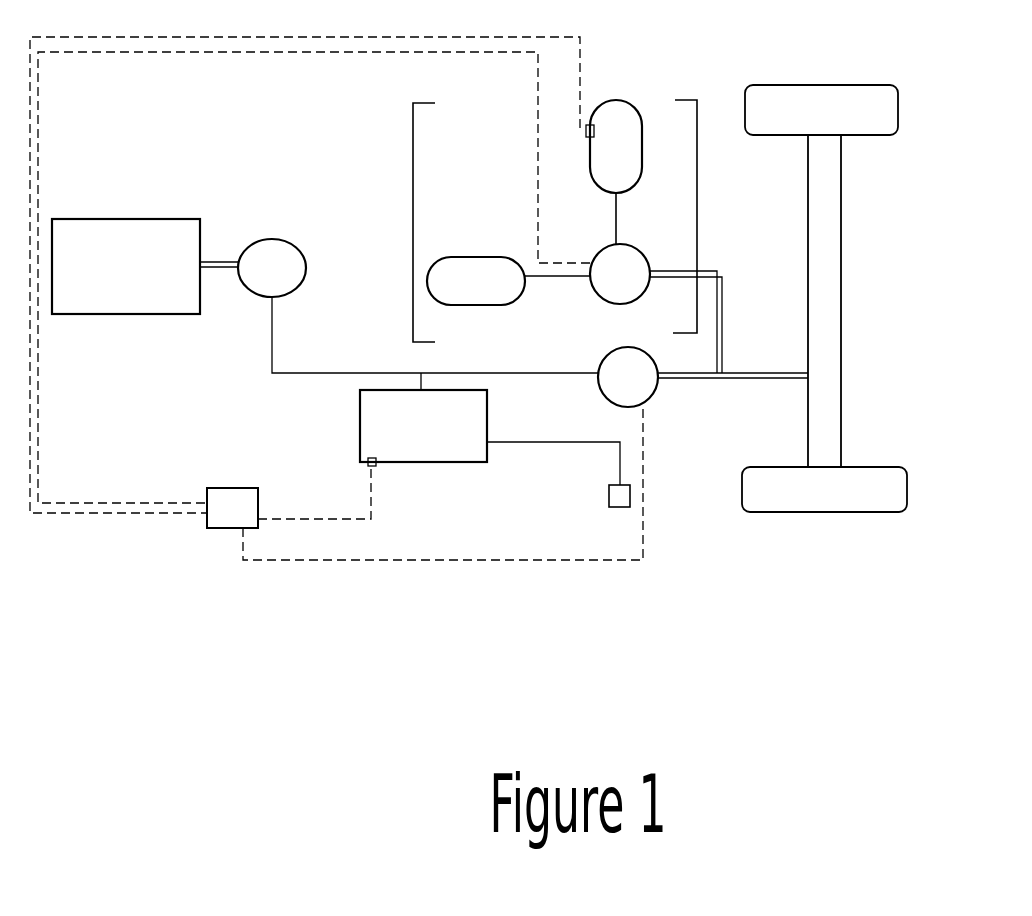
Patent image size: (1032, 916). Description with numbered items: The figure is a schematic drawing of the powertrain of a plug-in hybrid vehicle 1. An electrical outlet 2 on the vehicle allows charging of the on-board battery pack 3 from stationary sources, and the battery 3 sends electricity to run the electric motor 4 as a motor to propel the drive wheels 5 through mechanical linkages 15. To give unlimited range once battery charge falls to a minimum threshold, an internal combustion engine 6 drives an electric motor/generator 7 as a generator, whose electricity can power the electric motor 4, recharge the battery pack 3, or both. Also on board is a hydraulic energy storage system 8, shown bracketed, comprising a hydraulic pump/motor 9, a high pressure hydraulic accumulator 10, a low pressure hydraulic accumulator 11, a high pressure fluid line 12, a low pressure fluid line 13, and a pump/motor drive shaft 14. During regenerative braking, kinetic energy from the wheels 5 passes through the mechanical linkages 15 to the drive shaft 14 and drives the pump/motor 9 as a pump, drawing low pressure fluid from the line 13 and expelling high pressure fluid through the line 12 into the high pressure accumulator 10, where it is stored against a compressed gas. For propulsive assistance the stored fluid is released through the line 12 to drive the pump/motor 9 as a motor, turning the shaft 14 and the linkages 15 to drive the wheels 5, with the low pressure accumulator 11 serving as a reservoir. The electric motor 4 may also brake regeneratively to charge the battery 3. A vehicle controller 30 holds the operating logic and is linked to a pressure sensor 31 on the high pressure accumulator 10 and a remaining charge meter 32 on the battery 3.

The plug-in hybrid vehicle 1 is at (366, 149).
The electrical outlet 2 is at (613, 498).
The battery pack 3 is at (428, 437).
The electric motor 4 is at (630, 393).
The drive wheels 5 is at (800, 83).
The internal combustion engine 6 is at (132, 245).
The electric motor/generator 7 is at (263, 252).
The hydraulic energy storage system 8 is at (464, 131).
The hydraulic pump/motor 9 is at (630, 258).
The high pressure hydraulic accumulator 10 is at (608, 117).
The low pressure hydraulic accumulator 11 is at (475, 293).
The high pressure fluid line 12 is at (615, 212).
The low pressure fluid line 13 is at (553, 283).
The pump/motor drive shaft 14 is at (673, 278).
The mechanical linkages 15 is at (745, 375).
The vehicle controller 30 is at (211, 498).
The pressure sensor 31 is at (586, 133).
The remaining charge meter 32 is at (368, 468).